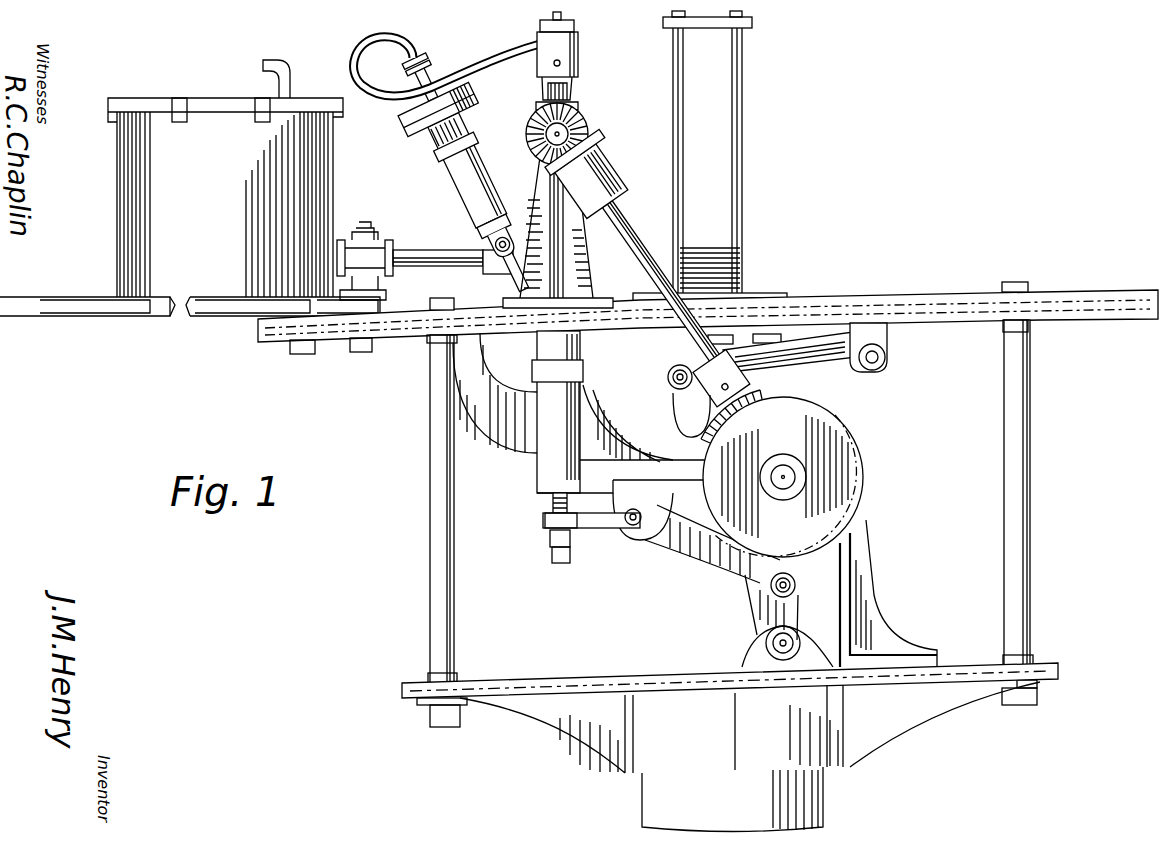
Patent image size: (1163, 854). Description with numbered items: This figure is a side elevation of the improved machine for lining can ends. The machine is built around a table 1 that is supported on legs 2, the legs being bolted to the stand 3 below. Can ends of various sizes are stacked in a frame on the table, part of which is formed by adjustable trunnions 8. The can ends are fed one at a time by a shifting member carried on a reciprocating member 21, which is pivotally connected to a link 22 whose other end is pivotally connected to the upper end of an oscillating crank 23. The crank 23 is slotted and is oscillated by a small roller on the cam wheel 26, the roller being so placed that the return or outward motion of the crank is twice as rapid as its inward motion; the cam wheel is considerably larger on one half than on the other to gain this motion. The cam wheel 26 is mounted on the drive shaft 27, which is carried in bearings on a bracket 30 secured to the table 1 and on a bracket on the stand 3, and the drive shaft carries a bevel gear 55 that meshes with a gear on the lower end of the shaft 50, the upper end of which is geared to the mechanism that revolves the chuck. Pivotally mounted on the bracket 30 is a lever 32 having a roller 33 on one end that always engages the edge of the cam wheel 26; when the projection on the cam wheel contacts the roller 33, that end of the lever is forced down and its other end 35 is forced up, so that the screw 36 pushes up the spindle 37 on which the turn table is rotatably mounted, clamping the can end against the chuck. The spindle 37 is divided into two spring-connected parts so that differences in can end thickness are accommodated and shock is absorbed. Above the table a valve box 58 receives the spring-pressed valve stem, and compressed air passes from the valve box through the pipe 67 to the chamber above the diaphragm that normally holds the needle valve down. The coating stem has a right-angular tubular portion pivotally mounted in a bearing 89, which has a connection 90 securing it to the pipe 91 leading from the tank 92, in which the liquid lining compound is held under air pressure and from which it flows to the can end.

The table 1 is at (390, 340).
The legs 2 is at (1022, 460).
The stand 3 is at (623, 740).
The adjustable trunnions 8 is at (179, 318).
The reciprocating member 21 is at (882, 340).
The link 22 is at (840, 350).
The oscillating crank 23 is at (740, 574).
The cam wheel 26 is at (790, 564).
The drive shaft 27 is at (795, 477).
The bracket 30 is at (497, 412).
The lever 32 is at (773, 577).
The roller 33 is at (797, 603).
The end of lever 35 is at (597, 528).
The screw 36 is at (550, 555).
The spindle 37 is at (550, 502).
The shaft 50 is at (659, 282).
The bevel gear 55 is at (803, 423).
The valve box 58 is at (578, 50).
The pipe 67 is at (496, 59).
The bearing 89 is at (508, 232).
The connection 90 is at (503, 268).
The pipe 91 is at (405, 258).
The tank 92 is at (167, 230).